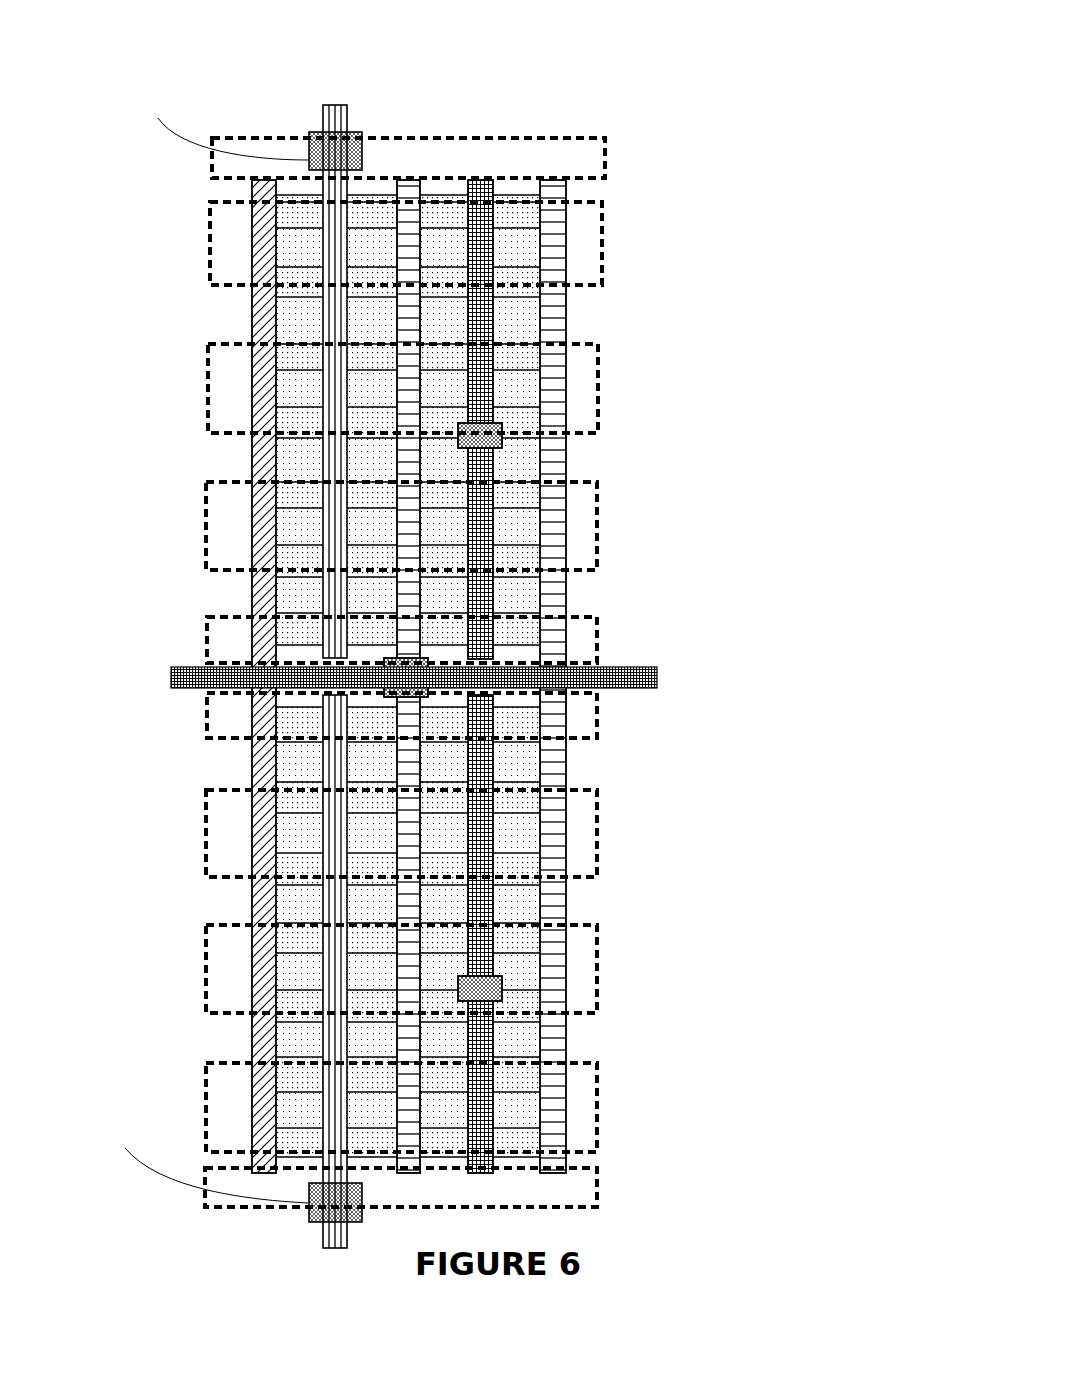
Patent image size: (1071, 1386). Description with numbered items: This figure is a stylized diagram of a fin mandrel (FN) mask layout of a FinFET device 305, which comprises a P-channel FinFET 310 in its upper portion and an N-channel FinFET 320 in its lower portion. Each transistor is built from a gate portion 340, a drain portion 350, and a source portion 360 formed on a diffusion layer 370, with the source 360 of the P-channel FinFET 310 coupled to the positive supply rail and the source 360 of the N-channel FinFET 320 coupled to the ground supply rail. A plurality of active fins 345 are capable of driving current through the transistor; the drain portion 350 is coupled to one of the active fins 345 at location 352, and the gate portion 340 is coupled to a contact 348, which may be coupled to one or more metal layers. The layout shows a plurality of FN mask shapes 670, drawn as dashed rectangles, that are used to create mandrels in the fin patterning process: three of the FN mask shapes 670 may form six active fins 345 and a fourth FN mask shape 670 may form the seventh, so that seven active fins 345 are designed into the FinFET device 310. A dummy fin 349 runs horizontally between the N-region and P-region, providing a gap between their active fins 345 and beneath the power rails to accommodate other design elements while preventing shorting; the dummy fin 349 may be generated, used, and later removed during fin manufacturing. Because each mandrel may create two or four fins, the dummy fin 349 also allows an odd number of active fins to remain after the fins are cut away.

The FinFET device 305 is at (789, 60).
The P-channel FinFET 310 is at (170, 554).
The N-channel FinFET 320 is at (185, 959).
The gate portion 340 is at (410, 180).
The active fins 345 is at (566, 345).
The contact 348 is at (430, 660).
The dummy fin 349 is at (652, 690).
The drain portion 350 is at (481, 180).
The location 352 is at (505, 432).
The source portion 360 is at (340, 105).
The diffusion layer 370 is at (520, 470).
The FN mask shapes 670 is at (206, 518).